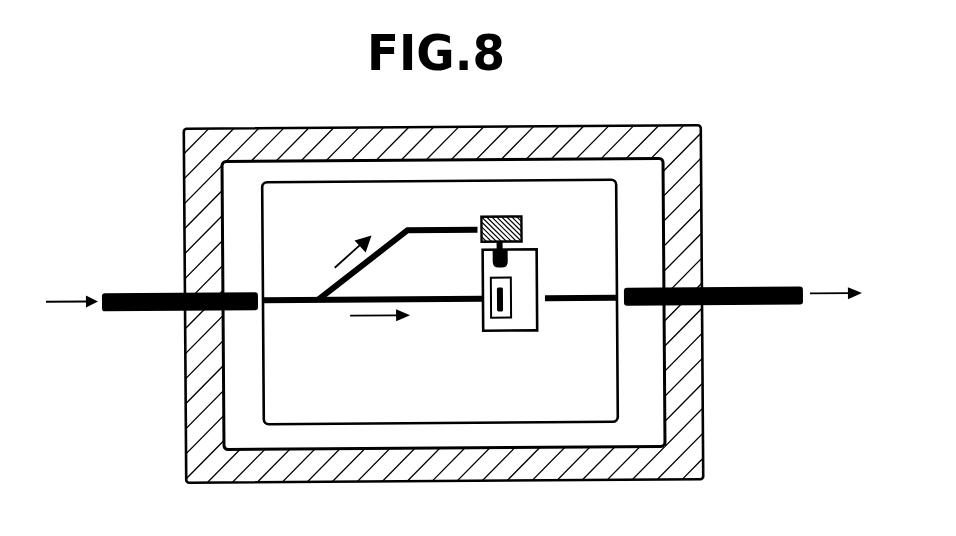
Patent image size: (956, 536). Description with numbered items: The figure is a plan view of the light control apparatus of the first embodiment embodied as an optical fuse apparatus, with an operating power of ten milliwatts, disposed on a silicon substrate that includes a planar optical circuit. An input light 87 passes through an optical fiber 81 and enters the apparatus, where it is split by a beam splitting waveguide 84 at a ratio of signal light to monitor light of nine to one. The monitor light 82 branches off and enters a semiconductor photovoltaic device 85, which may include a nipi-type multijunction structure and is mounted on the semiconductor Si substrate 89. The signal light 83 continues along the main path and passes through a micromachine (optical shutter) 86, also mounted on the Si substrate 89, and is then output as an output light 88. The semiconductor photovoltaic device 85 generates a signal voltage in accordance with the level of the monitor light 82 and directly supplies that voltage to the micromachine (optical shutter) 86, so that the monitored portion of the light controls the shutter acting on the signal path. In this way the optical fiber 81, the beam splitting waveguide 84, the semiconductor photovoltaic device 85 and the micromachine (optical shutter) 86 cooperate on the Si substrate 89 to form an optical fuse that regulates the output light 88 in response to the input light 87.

The optical fiber 81 is at (146, 291).
The monitor light 82 is at (346, 258).
The signal light 83 is at (378, 318).
The beam splitting waveguide 84 is at (301, 303).
The semiconductor photovoltaic device 85 is at (524, 228).
The micromachine (optical shutter) 86 is at (527, 331).
The input light 87 is at (67, 301).
The output light 88 is at (827, 298).
The semiconductor Si substrate 89 is at (593, 187).